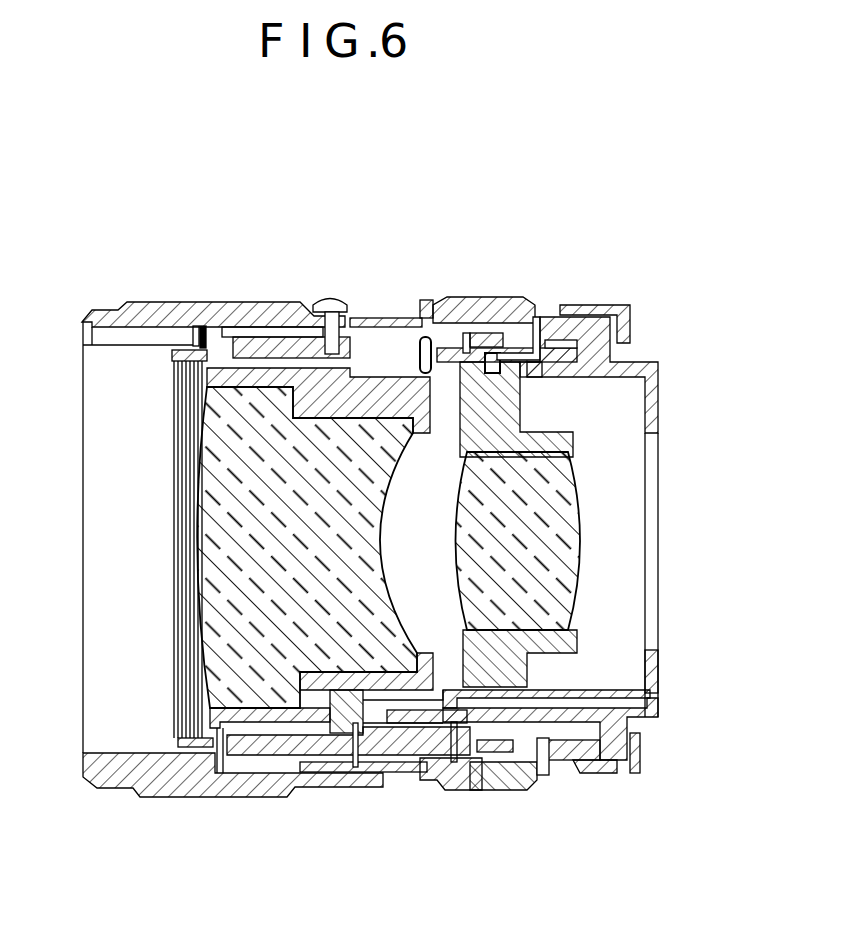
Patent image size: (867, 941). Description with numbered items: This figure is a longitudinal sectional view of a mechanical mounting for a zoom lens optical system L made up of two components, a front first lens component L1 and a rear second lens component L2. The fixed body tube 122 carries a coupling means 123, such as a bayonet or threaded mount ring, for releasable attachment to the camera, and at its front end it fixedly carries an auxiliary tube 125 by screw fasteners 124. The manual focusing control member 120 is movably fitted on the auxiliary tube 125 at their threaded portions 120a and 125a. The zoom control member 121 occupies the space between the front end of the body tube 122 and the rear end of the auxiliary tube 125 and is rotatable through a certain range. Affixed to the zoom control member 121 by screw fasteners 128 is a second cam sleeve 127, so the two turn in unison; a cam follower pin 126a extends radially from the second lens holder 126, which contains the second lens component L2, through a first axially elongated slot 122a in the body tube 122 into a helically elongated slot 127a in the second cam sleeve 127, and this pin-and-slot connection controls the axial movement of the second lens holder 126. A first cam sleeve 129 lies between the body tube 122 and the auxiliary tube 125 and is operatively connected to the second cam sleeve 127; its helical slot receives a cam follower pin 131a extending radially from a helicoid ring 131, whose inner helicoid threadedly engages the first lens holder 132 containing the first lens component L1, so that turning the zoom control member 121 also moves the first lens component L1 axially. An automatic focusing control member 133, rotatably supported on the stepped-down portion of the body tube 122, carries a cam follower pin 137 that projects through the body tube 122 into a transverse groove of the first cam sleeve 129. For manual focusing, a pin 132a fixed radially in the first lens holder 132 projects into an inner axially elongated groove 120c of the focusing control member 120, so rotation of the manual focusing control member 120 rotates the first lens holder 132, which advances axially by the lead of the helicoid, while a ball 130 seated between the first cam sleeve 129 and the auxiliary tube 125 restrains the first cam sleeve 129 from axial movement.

The zoom lens optical system L is at (376, 164).
The first lens component L1 is at (319, 547).
The second lens component L2 is at (543, 541).
The manual focusing control member 120 is at (213, 497).
The threaded portion 120a is at (233, 806).
The inner axially elongated groove 120c is at (140, 283).
The zoom control member 121 is at (489, 282).
The body tube 122 is at (520, 579).
The first axially elongated slot 122a is at (583, 376).
The coupling means 123 is at (614, 519).
The screw fasteners 124 is at (272, 289).
The auxiliary tube 125 is at (321, 522).
The threaded portion 125a is at (348, 793).
The second lens holder 126 is at (544, 524).
The cam follower pin 126a is at (507, 286).
The second cam sleeve 127 is at (526, 547).
The helically elongated slot 127a is at (542, 396).
The screw fasteners 128 is at (529, 294).
The first cam sleeve 129 is at (477, 545).
The ball 130 is at (345, 561).
The helicoid ring 131 is at (365, 794).
The cam follower pin 131a is at (352, 298).
The first lens holder 132 is at (337, 550).
The pin 132a is at (221, 295).
The automatic focusing control member 133 is at (578, 668).
The cam follower pin 137 is at (507, 302).